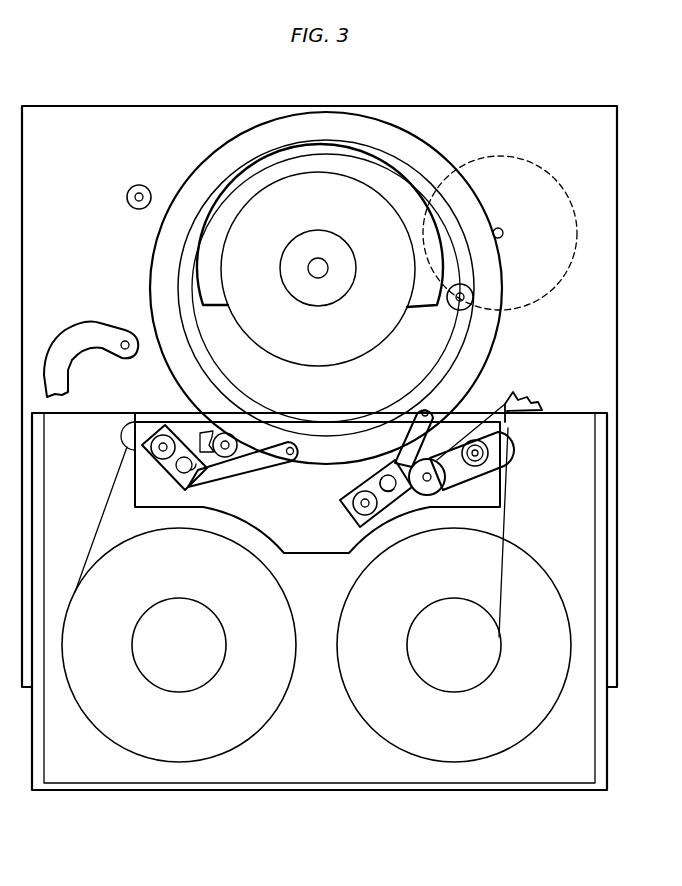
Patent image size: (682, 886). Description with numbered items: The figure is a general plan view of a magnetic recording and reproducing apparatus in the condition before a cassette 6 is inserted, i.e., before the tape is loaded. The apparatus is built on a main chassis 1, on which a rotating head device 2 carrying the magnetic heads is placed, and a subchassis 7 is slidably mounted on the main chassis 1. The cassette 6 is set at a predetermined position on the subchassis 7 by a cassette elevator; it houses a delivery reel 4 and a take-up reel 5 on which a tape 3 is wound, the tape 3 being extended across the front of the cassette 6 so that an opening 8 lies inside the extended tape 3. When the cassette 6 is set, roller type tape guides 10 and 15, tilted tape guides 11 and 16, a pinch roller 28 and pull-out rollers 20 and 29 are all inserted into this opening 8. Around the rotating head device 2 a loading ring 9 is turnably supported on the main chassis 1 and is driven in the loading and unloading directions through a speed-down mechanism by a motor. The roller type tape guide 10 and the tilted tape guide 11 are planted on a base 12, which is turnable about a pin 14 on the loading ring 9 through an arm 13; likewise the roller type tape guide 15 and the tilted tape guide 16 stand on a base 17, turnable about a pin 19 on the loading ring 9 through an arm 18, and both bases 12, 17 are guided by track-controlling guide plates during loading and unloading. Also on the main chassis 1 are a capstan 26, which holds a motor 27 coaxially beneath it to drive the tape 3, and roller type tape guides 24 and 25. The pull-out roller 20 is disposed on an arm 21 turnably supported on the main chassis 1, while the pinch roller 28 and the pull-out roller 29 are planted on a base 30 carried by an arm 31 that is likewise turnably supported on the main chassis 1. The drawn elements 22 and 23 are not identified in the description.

The main chassis 1 is at (50, 150).
The rotating head device 2 is at (253, 330).
The tape 3 is at (98, 507).
The delivery reel 4 is at (110, 733).
The take-up reel 5 is at (527, 728).
The cassette 6 is at (597, 758).
The subchassis 7 is at (540, 792).
The opening 8 is at (335, 555).
The loading ring 9 is at (497, 328).
The roller type tape guide 10 is at (152, 458).
The tilted tape guide 11 is at (198, 487).
The base 12 is at (180, 440).
The arm 13 is at (237, 470).
The pin 14 is at (293, 451).
The roller type tape guide 15 is at (345, 505).
The tilted tape guide 16 is at (405, 495).
The base 17 is at (378, 478).
The arm 18 is at (403, 437).
The pin 19 is at (424, 408).
The pull-out roller 20 is at (233, 433).
The arm 21 is at (212, 432).
The pin 22 is at (125, 352).
The lever 23 is at (85, 355).
The roller type tape guide 24 is at (139, 185).
The roller type tape guide 25 is at (457, 311).
The capstan 26 is at (504, 232).
The motor 27 is at (547, 170).
The pinch roller 28 is at (446, 482).
The pull-out roller 29 is at (508, 458).
The base 30 is at (470, 440).
The arm 31 is at (505, 390).